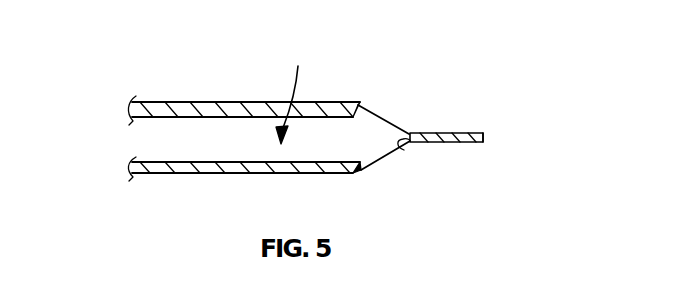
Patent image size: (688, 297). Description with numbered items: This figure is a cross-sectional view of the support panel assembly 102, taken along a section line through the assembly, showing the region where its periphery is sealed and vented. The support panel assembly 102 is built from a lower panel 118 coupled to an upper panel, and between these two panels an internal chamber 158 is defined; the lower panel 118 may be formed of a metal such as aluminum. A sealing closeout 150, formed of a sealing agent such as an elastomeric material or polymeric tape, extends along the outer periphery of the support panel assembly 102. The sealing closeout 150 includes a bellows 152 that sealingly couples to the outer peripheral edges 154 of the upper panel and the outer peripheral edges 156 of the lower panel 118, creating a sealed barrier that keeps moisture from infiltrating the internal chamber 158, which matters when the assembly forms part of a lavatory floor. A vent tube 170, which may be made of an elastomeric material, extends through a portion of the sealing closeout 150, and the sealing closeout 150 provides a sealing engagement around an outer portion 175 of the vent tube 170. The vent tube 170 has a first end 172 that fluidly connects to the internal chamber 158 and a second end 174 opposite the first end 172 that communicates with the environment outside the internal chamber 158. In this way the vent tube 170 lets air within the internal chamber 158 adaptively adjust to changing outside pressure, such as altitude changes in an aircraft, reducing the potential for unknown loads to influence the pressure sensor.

The support panel assembly 102 is at (131, 63).
The lower panel 118 is at (222, 175).
The sealing closeout 150 is at (392, 118).
The bellows 152 is at (393, 162).
The outer peripheral edges of the upper panel 154 is at (358, 103).
The outer peripheral edges of the lower panel 156 is at (362, 174).
The internal chamber 158 is at (301, 92).
The vent tube 170 is at (217, 102).
The first end 172 is at (404, 150).
The second end 174 is at (484, 138).
The outer portion of the vent tube 175 is at (412, 133).